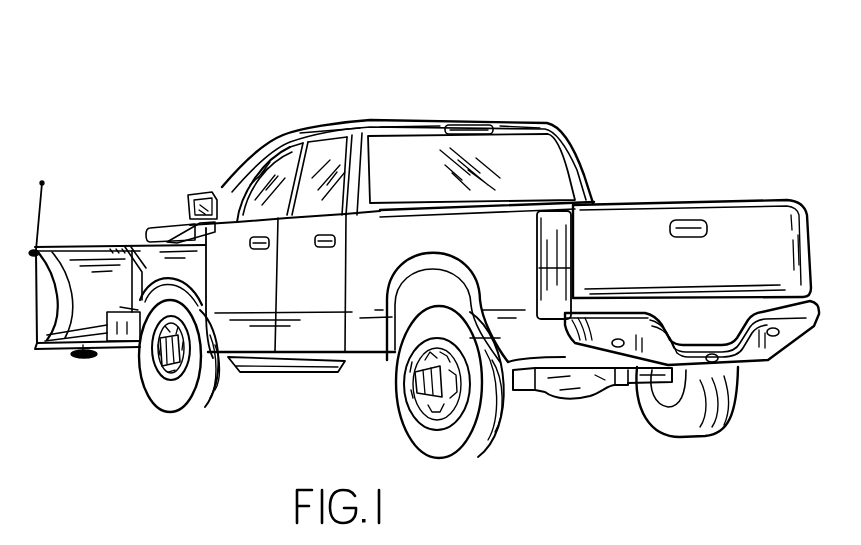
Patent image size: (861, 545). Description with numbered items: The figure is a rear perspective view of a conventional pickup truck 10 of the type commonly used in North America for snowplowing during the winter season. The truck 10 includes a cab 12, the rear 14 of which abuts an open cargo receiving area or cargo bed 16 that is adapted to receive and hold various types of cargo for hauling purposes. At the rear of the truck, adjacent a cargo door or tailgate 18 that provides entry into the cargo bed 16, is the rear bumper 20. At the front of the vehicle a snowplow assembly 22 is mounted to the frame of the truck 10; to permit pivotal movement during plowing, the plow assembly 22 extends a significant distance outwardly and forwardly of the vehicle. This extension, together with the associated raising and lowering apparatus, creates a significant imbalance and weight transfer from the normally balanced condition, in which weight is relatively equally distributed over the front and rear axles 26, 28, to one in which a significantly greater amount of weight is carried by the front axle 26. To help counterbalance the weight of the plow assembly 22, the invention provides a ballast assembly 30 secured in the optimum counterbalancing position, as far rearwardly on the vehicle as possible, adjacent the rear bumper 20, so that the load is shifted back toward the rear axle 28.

The pickup truck 10 is at (600, 78).
The cab 12 is at (332, 125).
The rear of the cab 14 is at (563, 153).
The cargo bed 16 is at (683, 203).
The tailgate 18 is at (732, 223).
The rear bumper 20 is at (683, 325).
The snowplow assembly 22 is at (88, 240).
The front axle 26 is at (160, 360).
The rear axle 28 is at (588, 385).
The ballast assembly 30 is at (775, 375).